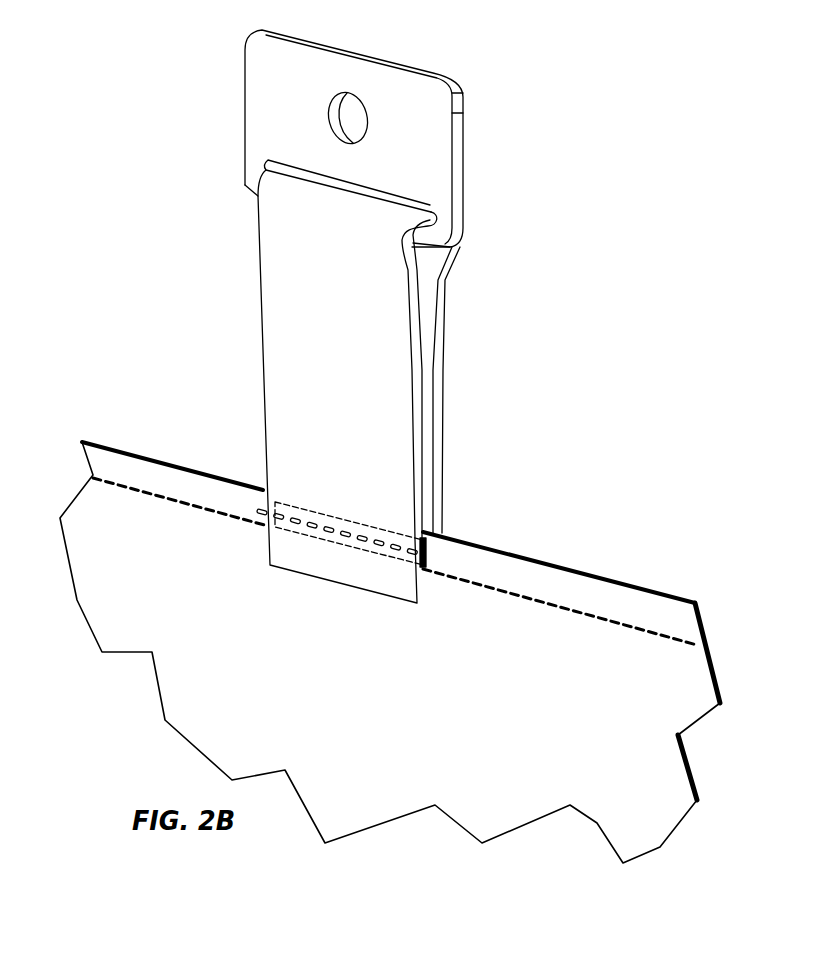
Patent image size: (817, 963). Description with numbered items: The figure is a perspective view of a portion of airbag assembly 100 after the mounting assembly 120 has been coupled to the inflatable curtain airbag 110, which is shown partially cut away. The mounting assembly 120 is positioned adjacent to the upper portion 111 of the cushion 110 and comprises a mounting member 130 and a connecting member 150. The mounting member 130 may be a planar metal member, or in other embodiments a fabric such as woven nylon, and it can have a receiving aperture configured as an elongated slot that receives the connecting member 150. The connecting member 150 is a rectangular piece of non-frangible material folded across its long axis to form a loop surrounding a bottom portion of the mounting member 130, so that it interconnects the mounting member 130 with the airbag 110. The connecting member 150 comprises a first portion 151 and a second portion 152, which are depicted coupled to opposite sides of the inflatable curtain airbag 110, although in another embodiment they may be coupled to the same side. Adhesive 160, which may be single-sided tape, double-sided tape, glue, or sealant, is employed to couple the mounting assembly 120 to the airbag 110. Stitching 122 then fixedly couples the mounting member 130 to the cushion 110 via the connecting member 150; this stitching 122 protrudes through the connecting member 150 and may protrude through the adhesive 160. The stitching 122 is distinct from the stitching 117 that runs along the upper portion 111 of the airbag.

The airbag assembly 100 is at (611, 160).
The inflatable curtain airbag 110 is at (430, 652).
The upper portion 111 is at (645, 712).
The stitching 117 is at (630, 628).
The mounting assembly 120 is at (369, 316).
The stitching 122 is at (400, 545).
The mounting member 130 is at (418, 110).
The connecting member 150 is at (429, 386).
The first portion 151 is at (388, 327).
The second portion 152 is at (443, 343).
The adhesive 160 is at (355, 520).